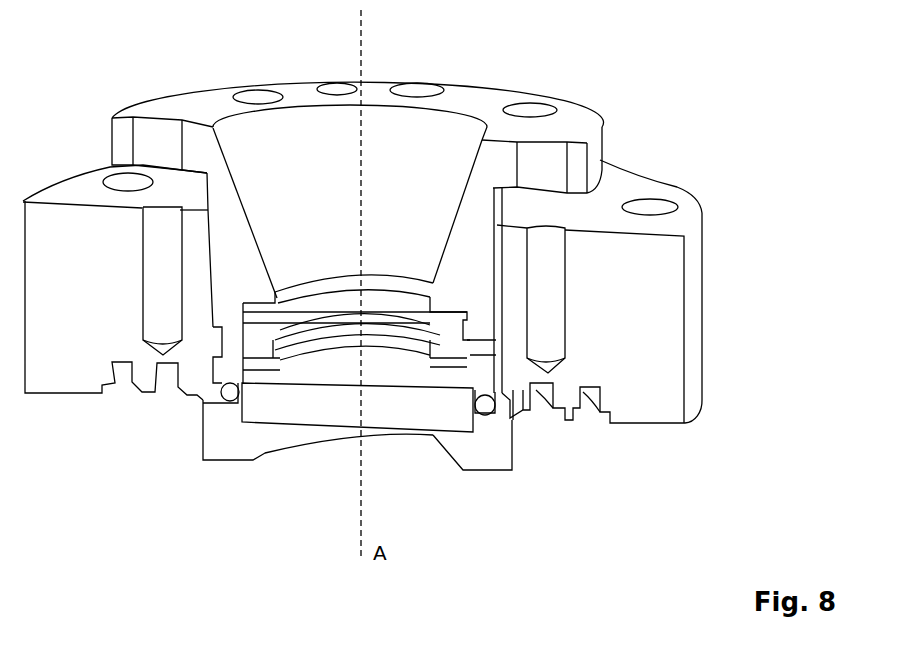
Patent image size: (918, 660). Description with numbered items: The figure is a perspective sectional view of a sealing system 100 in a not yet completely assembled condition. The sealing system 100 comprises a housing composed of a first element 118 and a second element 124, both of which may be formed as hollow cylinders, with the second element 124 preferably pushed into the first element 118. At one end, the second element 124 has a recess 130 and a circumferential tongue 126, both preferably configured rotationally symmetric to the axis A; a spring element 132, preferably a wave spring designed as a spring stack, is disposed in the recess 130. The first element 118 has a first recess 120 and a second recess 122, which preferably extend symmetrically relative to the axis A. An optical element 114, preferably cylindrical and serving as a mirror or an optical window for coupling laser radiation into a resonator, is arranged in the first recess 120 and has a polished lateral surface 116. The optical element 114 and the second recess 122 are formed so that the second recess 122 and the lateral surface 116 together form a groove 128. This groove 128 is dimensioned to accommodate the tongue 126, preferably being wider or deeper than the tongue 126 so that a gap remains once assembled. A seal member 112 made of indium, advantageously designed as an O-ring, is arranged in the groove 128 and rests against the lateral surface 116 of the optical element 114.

The sealing system 100 is at (653, 115).
The seal member 112 is at (493, 412).
The optical element 114 is at (265, 410).
The polished lateral surface 116 is at (242, 422).
The first element 118 is at (669, 395).
The first recess 120 is at (460, 435).
The second recess 122 is at (498, 420).
The second element 124 is at (497, 97).
The circumferential tongue 126 is at (290, 365).
The groove 128 is at (487, 415).
The recess 130 is at (262, 317).
The spring element 132 is at (470, 355).